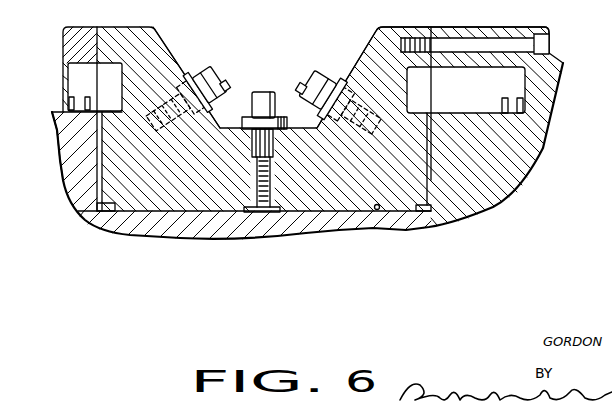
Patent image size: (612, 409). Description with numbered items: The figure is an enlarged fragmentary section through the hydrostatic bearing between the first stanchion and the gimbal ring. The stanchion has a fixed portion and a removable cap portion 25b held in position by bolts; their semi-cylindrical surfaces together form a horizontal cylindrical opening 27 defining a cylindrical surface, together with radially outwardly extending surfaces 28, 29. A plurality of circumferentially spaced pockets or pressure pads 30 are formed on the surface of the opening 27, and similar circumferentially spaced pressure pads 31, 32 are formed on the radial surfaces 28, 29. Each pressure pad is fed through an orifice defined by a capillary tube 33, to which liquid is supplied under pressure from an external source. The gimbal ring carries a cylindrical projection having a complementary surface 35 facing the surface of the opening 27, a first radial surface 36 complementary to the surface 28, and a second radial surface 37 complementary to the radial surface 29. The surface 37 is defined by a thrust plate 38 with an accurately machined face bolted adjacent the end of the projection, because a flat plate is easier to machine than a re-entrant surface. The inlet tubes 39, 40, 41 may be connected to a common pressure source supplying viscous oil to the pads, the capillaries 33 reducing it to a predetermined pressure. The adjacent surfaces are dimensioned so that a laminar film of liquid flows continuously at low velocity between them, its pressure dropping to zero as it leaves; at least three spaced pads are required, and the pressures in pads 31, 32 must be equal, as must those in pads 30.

The removable cap portion 25b is at (363, 62).
The horizontal cylindrical opening 27 is at (378, 210).
The radially outwardly extending surface 28 is at (90, 224).
The radially outwardly extending surface 29 is at (406, 217).
The pressure pads 30 is at (282, 213).
The pressure pads 31 is at (120, 213).
The pressure pads 32 is at (438, 180).
The capillary tube 33 is at (167, 63).
The complementary surface 35 is at (207, 213).
The first radial surface 36 is at (62, 137).
The second radial surface 37 is at (432, 127).
The thrust plate 38 is at (478, 120).
The inlet tube 39 is at (220, 78).
The inlet tube 40 is at (260, 100).
The inlet tube 41 is at (315, 82).